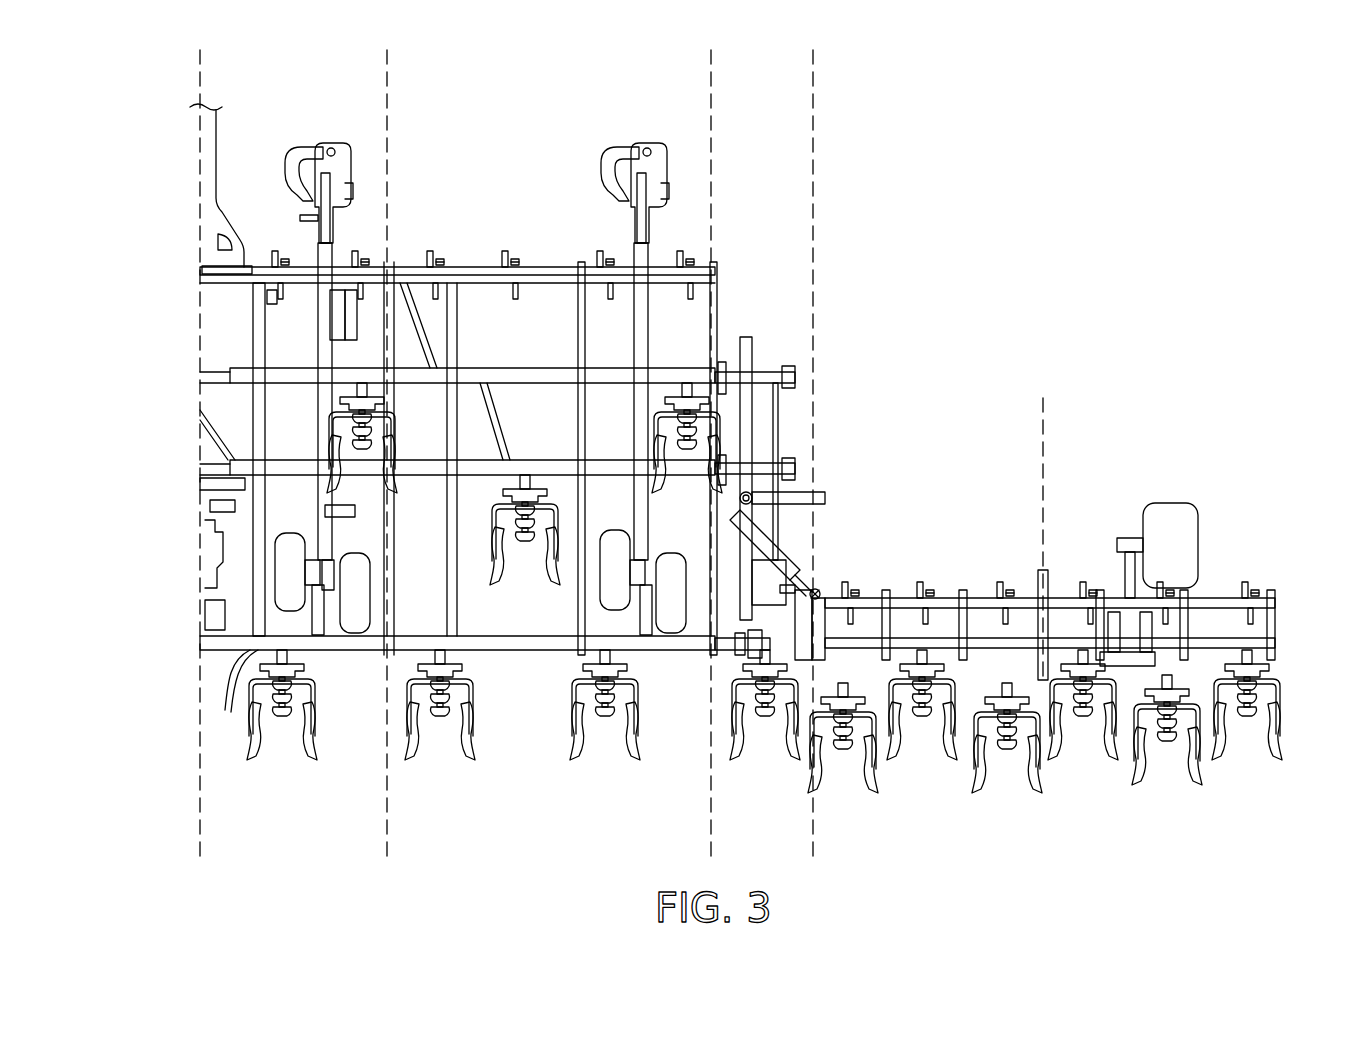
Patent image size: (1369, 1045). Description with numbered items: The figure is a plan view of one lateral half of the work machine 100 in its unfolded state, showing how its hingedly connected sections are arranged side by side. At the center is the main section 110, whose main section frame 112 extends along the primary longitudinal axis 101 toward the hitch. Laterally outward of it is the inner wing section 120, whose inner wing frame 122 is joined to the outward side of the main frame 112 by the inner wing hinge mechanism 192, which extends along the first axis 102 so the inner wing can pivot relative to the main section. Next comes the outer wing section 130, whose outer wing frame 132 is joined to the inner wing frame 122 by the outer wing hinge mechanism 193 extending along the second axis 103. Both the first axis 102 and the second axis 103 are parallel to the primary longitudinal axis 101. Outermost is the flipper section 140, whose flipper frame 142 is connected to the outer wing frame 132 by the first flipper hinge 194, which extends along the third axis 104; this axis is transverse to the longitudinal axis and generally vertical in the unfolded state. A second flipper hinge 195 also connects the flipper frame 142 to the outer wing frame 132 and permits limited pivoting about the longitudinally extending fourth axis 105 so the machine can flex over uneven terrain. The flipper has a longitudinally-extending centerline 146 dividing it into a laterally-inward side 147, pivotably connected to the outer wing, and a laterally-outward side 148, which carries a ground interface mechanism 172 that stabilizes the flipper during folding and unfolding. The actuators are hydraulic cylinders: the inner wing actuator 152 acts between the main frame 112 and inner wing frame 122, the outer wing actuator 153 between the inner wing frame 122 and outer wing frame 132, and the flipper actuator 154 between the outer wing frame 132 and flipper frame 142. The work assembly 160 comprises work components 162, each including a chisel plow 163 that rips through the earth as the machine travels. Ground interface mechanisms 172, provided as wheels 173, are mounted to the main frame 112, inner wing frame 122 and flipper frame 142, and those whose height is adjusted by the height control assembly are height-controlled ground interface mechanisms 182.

The work machine 100 is at (1070, 136).
The primary longitudinal axis 101 is at (193, 826).
The first axis 102 is at (380, 826).
The second axis 103 is at (704, 826).
The third axis 104 is at (812, 584).
The fourth axis 105 is at (805, 826).
The main section 110 is at (290, 763).
The main section frame 112 is at (273, 266).
The inner wing section 120 is at (523, 765).
The inner wing frame 122 is at (562, 272).
The outer wing section 130 is at (757, 763).
The outer wing frame 132 is at (764, 368).
The flipper section 140 is at (927, 763).
The flipper frame 142 is at (973, 596).
The centerline 146 is at (1038, 458).
The laterally-inward side 147 is at (985, 388).
The laterally-outward side 148 is at (1102, 352).
The inner wing actuator 152 is at (366, 248).
The outer wing actuator 153 is at (706, 668).
The flipper actuator 154 is at (735, 536).
The work assembly 160 is at (1303, 706).
The work component 162 is at (503, 614).
The chisel plow 163 is at (543, 593).
The ground interface mechanism 172 is at (355, 525).
The wheel 173 is at (306, 540).
The height-controlled ground interface mechanism 182 is at (1170, 464).
The inner wing hinge mechanism 192 is at (432, 240).
The outer wing hinge mechanism 193 is at (734, 312).
The first flipper hinge 194 is at (818, 528).
The second flipper hinge 195 is at (840, 666).